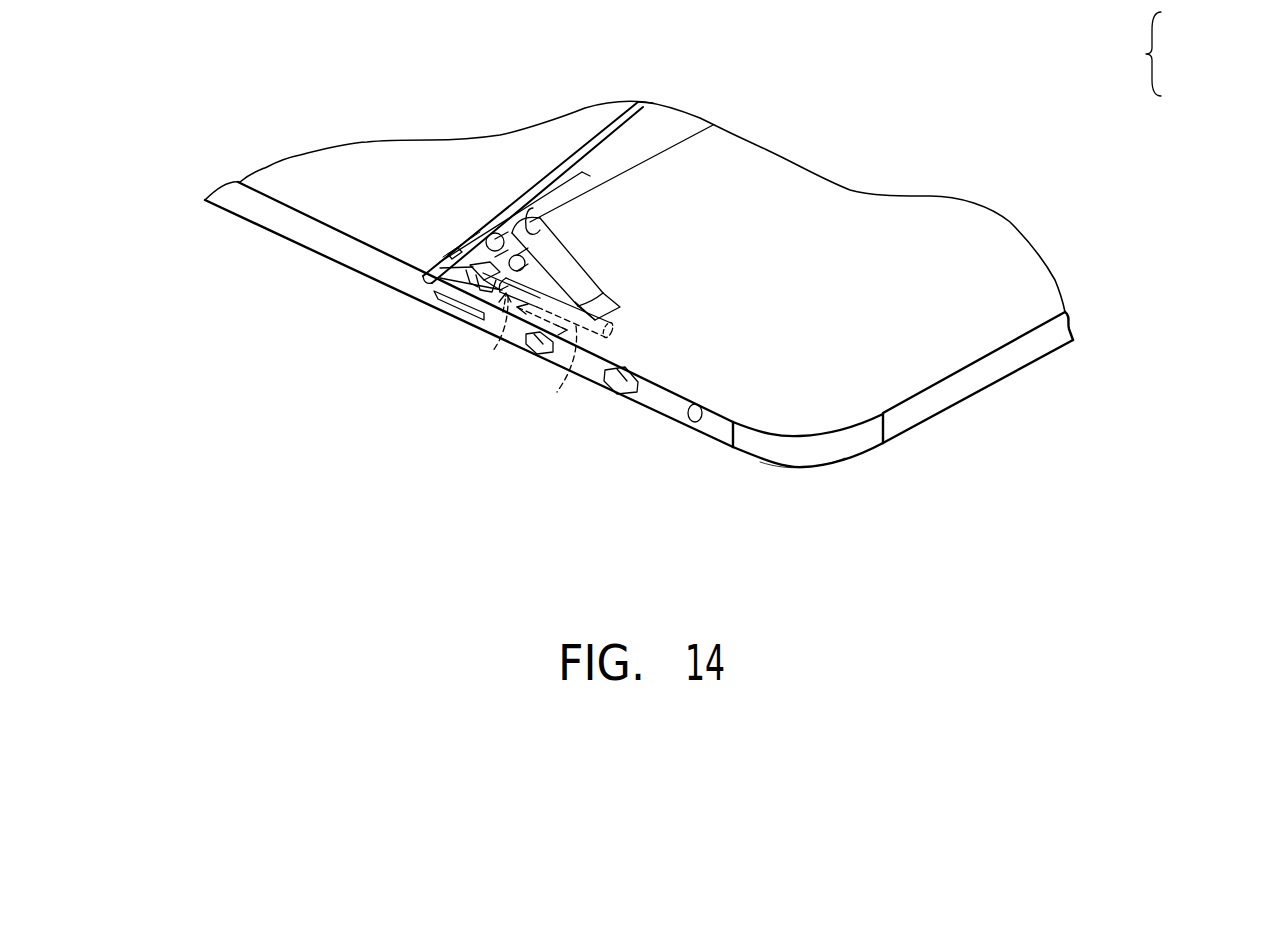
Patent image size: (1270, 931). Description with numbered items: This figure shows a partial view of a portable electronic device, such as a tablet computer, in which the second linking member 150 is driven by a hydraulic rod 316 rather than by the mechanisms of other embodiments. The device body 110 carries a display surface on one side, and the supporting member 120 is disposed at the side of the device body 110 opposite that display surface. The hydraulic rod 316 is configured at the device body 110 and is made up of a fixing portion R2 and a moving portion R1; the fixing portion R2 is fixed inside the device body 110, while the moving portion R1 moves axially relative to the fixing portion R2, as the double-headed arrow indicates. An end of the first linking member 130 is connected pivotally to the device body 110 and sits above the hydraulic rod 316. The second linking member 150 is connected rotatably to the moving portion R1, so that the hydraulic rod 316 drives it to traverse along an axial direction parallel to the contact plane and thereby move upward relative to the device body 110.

The device body 110 is at (847, 203).
The supporting member 120 is at (590, 154).
The first linking member 130 is at (565, 263).
The second linking member 150 is at (452, 268).
The moving portion R1 is at (484, 340).
The fixing portion R2 is at (552, 377).
The hydraulic rod 316 is at (1150, 55).